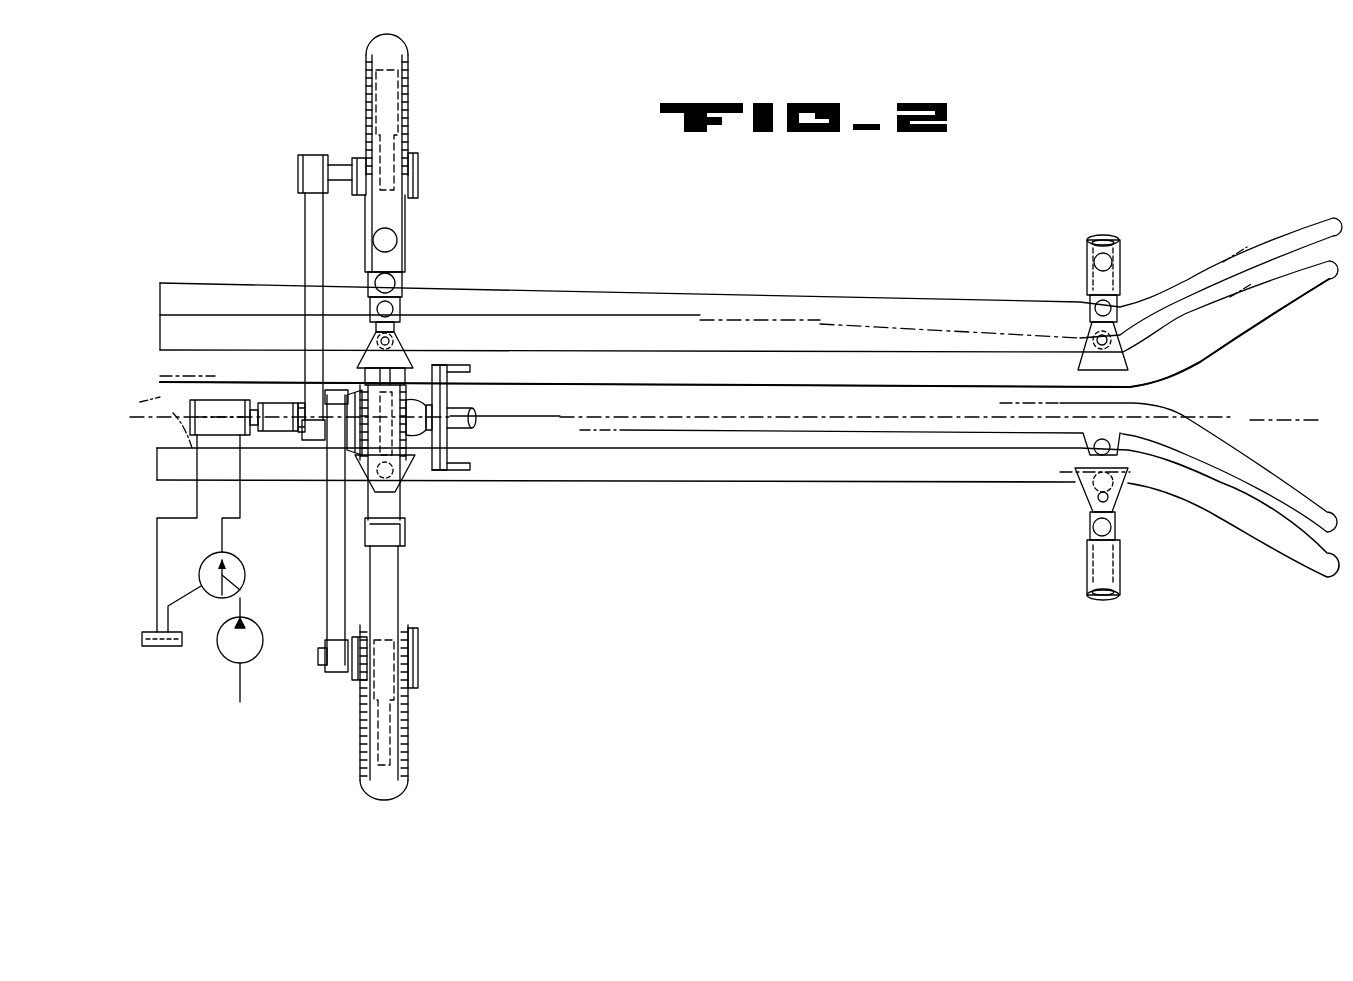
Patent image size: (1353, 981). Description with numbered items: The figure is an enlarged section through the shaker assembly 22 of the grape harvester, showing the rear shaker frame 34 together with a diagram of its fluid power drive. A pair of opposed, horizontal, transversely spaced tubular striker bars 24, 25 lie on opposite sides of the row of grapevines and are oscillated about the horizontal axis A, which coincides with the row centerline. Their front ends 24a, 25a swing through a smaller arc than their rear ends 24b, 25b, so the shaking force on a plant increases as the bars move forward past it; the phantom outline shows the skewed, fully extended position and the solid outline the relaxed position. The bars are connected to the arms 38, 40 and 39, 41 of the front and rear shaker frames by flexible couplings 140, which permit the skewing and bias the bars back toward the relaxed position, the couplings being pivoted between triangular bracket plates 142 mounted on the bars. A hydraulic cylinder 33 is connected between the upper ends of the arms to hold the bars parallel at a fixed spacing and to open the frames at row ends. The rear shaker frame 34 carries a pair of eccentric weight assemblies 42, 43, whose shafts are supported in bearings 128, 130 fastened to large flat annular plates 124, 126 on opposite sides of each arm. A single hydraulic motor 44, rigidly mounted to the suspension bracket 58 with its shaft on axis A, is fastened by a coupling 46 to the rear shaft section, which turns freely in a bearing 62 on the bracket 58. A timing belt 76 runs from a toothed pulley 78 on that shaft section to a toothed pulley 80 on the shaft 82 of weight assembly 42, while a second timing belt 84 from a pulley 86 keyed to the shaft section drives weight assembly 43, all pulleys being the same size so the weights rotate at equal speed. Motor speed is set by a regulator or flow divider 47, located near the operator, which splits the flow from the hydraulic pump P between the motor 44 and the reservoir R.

The shaker assembly 22 is at (856, 252).
The striker bar 24 is at (722, 417).
The front end of striker bar 24a is at (1228, 480).
The rear end of striker bar 24b is at (162, 412).
The striker bar 25 is at (698, 353).
The front end of striker bar 25a is at (1187, 322).
The rear end of striker bar 25b is at (192, 354).
The hydraulic cylinder 33 is at (396, 510).
The rear shaker frame 34 is at (362, 101).
The arm 38 is at (1112, 598).
The arm 39 is at (1103, 238).
The arm 40 is at (388, 572).
The arm 41 is at (402, 279).
The eccentric weight assembly 42 is at (364, 768).
The eccentric weight assembly 43 is at (406, 90).
The hydraulic motor 44 is at (216, 400).
The coupling 46 is at (277, 432).
The regulator or flow divider 47 is at (232, 566).
The suspension bracket 58 is at (458, 467).
The bearing 62 is at (443, 407).
The timing belt 76 is at (326, 523).
The toothed pulley 78 is at (322, 440).
The toothed pulley 80 is at (328, 673).
The shaft 82 is at (320, 657).
The timing belt 84 is at (303, 215).
The pulley 86 is at (300, 402).
The annular plate 124 is at (364, 55).
The annular plate 126 is at (410, 56).
The bearing 128 is at (362, 156).
The bearing 130 is at (419, 146).
The flexible coupling 140 is at (402, 311).
The triangular bracket plate 142 is at (1085, 362).
The axis A is at (1233, 420).
The reservoir R is at (150, 648).
The hydraulic pump P is at (226, 655).